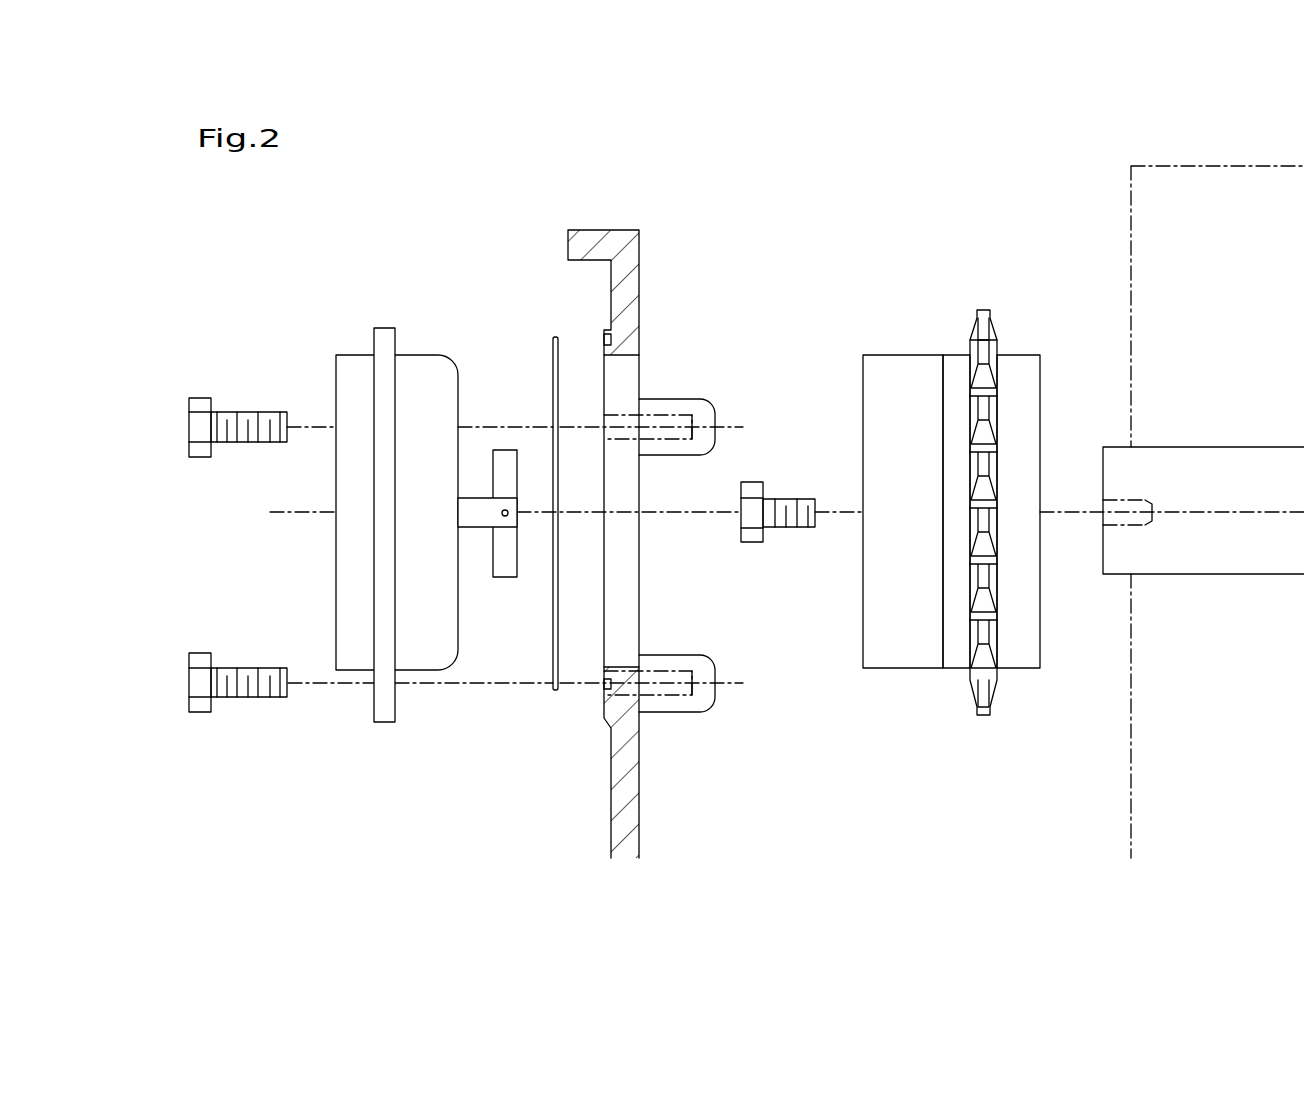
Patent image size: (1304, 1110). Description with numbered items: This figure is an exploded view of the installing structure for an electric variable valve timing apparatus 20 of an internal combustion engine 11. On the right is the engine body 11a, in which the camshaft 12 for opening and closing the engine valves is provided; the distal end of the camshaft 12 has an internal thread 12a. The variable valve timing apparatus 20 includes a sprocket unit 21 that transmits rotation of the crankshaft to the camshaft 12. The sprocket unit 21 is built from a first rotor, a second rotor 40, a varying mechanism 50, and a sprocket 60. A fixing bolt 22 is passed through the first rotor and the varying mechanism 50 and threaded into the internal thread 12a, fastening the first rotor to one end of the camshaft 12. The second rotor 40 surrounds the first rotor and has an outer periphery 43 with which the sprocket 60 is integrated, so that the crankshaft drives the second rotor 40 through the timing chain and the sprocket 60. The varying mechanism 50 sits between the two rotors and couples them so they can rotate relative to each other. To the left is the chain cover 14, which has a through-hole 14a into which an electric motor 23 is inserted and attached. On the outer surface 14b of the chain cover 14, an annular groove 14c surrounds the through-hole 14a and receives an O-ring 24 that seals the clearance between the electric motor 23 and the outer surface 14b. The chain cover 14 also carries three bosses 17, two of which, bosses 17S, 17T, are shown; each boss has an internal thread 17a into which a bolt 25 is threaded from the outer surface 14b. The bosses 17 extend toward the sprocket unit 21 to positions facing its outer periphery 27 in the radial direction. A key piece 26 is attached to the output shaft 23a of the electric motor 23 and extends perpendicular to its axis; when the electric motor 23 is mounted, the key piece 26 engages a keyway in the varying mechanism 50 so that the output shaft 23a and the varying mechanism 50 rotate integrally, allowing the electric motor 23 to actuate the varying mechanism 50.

The internal combustion engine 11 is at (1164, 475).
The engine body 11a is at (1200, 166).
The camshaft 12 is at (1203, 486).
The internal thread 12a is at (1133, 500).
The chain cover 14 is at (624, 518).
The through-hole 14a is at (619, 667).
The outer surface 14b is at (611, 278).
The annular groove 14c is at (604, 338).
The boss 17 is at (713, 552).
The boss 17S is at (683, 399).
The boss 17T is at (715, 695).
The internal thread 17a is at (668, 440).
The variable valve timing apparatus 20 is at (736, 177).
The sprocket unit 21 is at (947, 251).
The fixing bolt 22 is at (786, 499).
The electric motor 23 is at (336, 600).
The output shaft 23a is at (474, 532).
The O-ring 24 is at (553, 337).
The bolt 25 is at (200, 398).
The key piece 26 is at (507, 578).
The outer periphery 27 is at (890, 355).
The second rotor 40 is at (1022, 355).
The outer periphery 43 is at (953, 355).
The varying mechanism 50 is at (951, 490).
The sprocket 60 is at (983, 310).